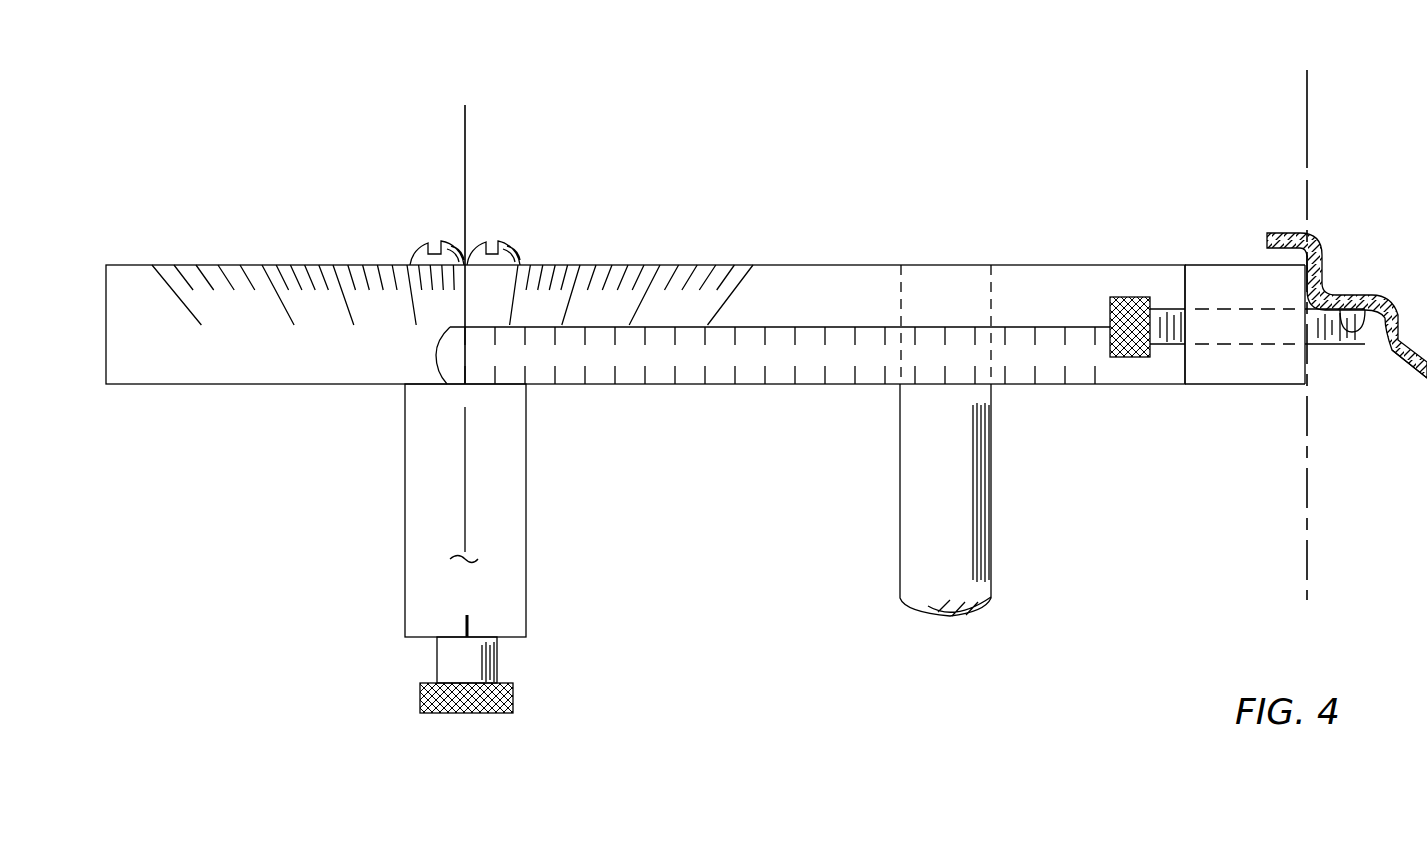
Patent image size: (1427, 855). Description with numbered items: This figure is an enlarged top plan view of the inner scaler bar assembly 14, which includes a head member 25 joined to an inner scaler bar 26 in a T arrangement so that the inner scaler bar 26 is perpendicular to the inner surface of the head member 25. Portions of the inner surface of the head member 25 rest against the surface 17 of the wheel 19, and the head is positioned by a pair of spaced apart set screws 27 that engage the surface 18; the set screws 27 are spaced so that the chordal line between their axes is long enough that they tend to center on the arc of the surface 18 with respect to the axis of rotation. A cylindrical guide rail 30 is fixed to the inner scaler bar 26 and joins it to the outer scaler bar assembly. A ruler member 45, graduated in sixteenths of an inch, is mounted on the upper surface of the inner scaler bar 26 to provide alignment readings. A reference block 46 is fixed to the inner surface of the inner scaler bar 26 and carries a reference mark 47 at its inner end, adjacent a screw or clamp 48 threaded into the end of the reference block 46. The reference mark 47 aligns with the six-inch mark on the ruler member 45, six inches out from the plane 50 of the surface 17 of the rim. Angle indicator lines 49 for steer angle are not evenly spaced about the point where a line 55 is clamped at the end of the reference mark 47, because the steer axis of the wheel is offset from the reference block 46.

The inner scaler bar assembly 14 is at (662, 256).
The surface of wheel 17 is at (1302, 278).
The surface 18 is at (1362, 330).
The wheel 19 is at (1426, 380).
The head member 25 is at (1264, 378).
The inner scaler bar 26 is at (833, 265).
The set screws 27 is at (1121, 297).
The cylindrical guide rail 30 is at (993, 507).
The ruler member 45 is at (808, 375).
The reference block 46 is at (518, 496).
The reference mark 47 is at (470, 625).
The screw or clamp 48 is at (497, 663).
The angle indicator lines 49 is at (341, 265).
The plane of the surface of the rim 50 is at (1305, 137).
The line 55 is at (468, 157).